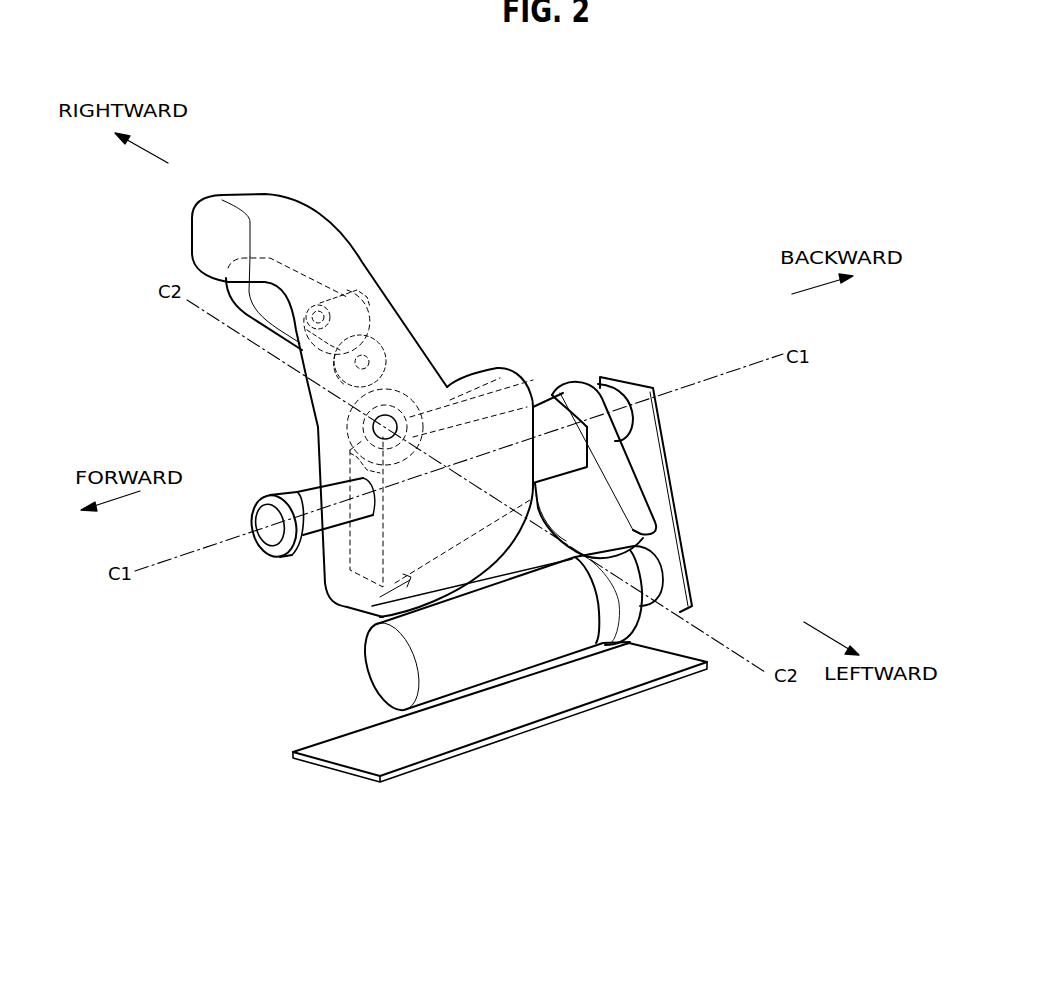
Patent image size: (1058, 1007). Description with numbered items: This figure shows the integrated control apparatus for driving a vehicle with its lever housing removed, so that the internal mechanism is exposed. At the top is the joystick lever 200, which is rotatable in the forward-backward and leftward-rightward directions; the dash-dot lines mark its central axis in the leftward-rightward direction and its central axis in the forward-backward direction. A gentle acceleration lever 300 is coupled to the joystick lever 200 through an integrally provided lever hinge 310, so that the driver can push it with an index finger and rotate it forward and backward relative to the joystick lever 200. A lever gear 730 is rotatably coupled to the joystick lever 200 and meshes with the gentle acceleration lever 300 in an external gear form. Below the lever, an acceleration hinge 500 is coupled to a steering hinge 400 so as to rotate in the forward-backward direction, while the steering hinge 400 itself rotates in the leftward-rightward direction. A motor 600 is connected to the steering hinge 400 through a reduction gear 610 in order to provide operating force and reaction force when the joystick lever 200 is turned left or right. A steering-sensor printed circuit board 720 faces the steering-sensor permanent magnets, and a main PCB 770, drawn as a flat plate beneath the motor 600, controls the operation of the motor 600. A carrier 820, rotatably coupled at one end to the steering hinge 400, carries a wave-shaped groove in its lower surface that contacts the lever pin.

The joystick lever 200 is at (303, 234).
The gentle acceleration lever 300 is at (273, 307).
The lever hinge 310 is at (321, 315).
The steering hinge 400 is at (570, 457).
The acceleration hinge 500 is at (407, 427).
The motor 600 is at (465, 673).
The reduction gear 610 is at (618, 552).
The steering-sensor printed circuit board 720 is at (687, 580).
The lever gear 730 is at (376, 347).
The main PCB 770 is at (553, 703).
The carrier 820 is at (330, 607).